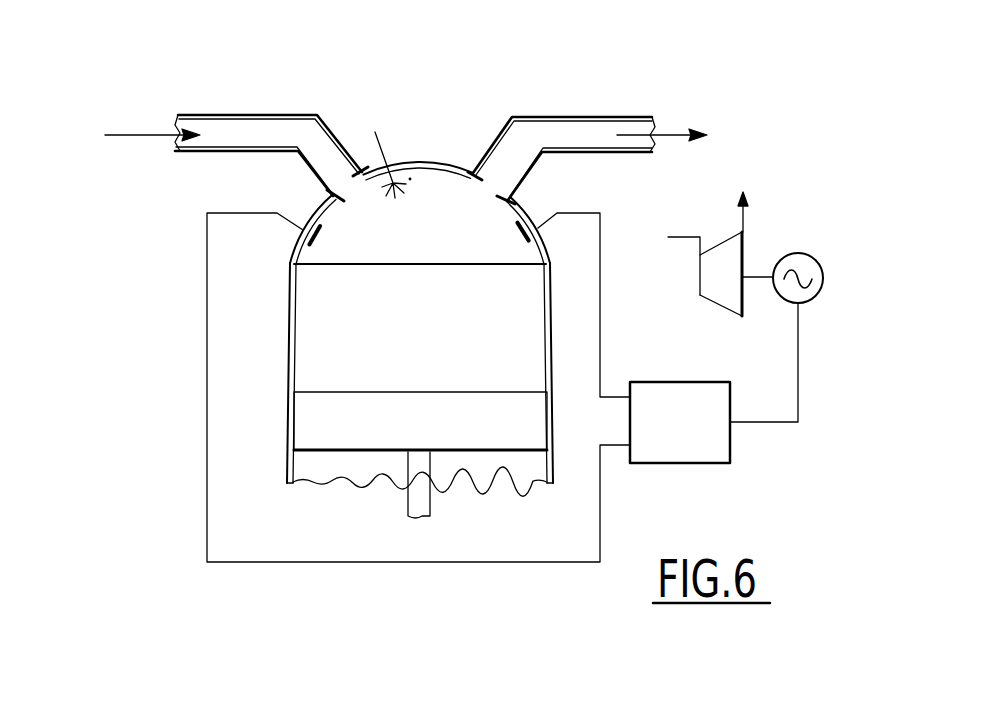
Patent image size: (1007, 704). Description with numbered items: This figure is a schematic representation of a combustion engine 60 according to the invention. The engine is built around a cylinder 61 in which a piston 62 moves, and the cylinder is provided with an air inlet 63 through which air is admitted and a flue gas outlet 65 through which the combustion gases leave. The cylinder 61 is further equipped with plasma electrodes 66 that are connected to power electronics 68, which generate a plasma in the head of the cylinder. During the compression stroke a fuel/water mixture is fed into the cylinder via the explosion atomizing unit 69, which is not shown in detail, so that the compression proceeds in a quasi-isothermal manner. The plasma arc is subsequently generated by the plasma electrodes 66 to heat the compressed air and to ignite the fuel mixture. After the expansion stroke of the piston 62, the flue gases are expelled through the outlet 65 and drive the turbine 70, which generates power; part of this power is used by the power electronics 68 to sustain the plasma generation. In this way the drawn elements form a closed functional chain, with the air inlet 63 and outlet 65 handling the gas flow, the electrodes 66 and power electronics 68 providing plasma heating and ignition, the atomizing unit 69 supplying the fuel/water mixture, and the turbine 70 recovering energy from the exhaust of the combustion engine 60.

The combustion engine 60 is at (648, 78).
The cylinder 61 is at (287, 343).
The piston 62 is at (313, 427).
The air inlet 63 is at (253, 115).
The flue gas outlet 65 is at (580, 115).
The plasma electrodes 66 is at (270, 215).
The power electronics 68 is at (697, 417).
The explosion atomizing unit 69 is at (386, 148).
The turbine 70 is at (730, 290).